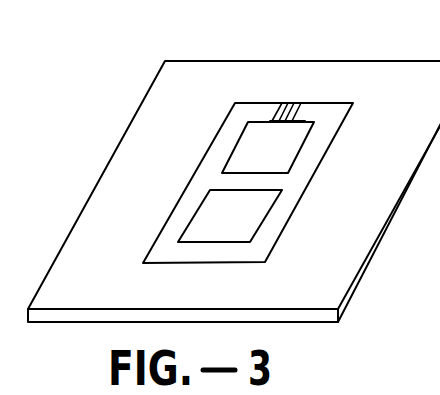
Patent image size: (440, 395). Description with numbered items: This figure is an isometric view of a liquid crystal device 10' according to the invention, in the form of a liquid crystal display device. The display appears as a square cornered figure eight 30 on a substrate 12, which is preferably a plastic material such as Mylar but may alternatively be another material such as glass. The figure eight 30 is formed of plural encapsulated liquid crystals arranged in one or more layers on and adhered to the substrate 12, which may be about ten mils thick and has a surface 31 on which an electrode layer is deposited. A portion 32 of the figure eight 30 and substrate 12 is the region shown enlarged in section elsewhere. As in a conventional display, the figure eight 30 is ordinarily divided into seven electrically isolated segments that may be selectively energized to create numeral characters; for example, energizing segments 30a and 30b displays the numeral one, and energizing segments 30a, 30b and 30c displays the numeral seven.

The liquid crystal device 10' is at (234, 166).
The substrate 12 is at (345, 309).
The figure eight 30 is at (328, 146).
The segment 30a is at (279, 231).
The segment 30b is at (300, 178).
The segment 30c is at (340, 103).
The surface of the substrate 31 is at (362, 248).
The portion of the figure eight 32 is at (279, 89).